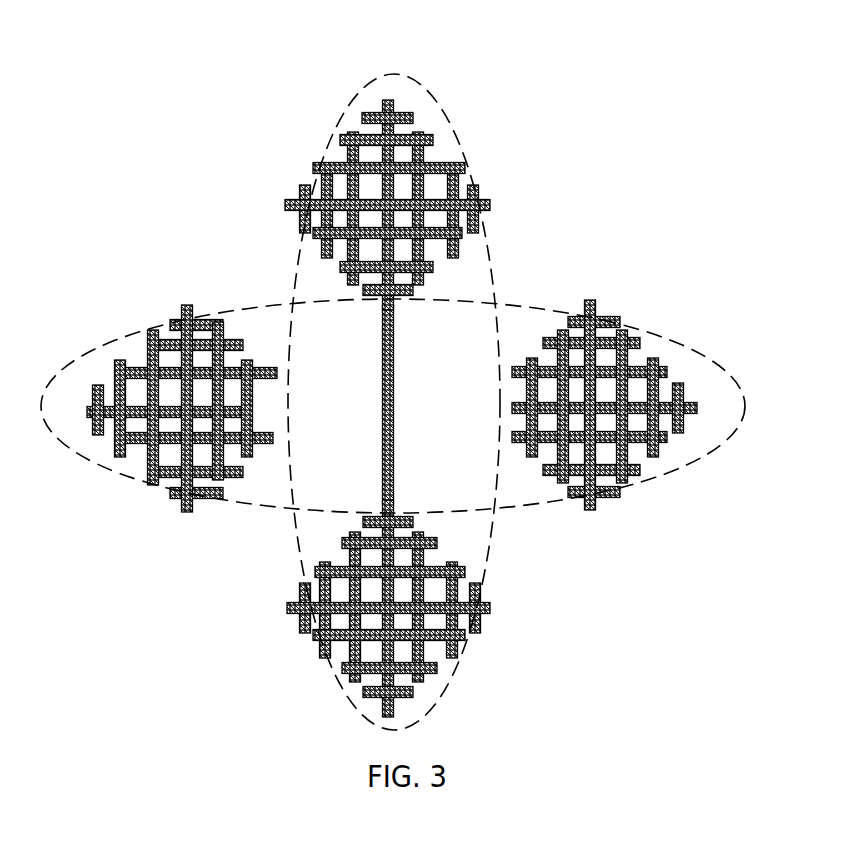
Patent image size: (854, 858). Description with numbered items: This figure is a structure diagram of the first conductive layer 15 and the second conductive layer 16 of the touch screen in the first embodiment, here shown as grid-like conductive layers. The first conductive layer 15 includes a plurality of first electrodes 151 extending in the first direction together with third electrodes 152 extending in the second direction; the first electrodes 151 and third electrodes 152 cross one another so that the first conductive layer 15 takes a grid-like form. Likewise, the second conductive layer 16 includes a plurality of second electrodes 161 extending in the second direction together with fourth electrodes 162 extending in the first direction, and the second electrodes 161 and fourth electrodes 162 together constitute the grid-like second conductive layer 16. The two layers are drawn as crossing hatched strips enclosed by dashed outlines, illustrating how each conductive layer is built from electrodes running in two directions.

The first conductive layer 15 is at (743, 277).
The first electrodes 151 is at (682, 264).
The third electrodes 152 is at (755, 333).
The second conductive layer 16 is at (537, 175).
The second electrodes 161 is at (440, 43).
The fourth electrodes 162 is at (481, 78).